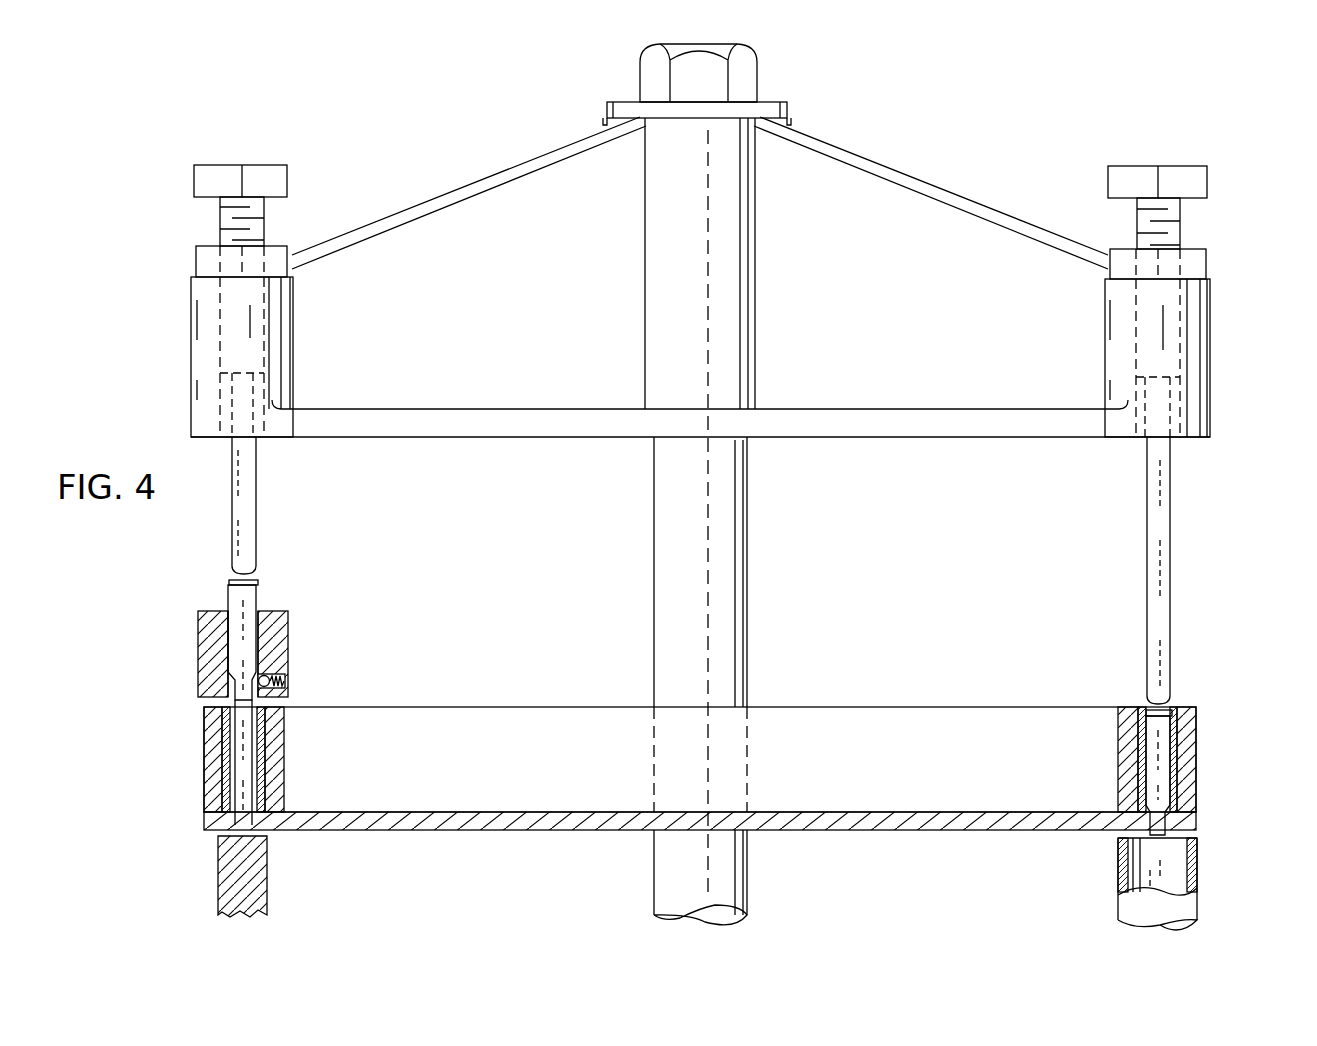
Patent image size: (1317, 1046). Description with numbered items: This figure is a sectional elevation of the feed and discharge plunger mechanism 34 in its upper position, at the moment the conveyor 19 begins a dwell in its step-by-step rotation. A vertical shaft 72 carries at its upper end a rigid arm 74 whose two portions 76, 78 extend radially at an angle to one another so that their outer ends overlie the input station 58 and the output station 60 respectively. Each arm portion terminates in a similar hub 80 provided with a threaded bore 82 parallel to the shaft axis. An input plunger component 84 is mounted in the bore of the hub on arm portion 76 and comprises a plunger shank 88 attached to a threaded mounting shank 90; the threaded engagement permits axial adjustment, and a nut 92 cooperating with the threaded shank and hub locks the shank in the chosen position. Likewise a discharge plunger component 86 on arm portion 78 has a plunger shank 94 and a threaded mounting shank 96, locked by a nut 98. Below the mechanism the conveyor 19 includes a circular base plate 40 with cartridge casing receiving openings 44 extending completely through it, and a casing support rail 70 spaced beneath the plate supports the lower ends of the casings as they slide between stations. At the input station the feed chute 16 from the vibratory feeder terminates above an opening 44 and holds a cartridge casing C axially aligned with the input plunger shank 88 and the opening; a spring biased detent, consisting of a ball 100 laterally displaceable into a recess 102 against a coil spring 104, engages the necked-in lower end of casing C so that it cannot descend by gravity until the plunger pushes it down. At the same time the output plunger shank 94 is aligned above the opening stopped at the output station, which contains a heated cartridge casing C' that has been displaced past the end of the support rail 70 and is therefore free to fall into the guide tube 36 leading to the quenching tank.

The feed and discharge plunger mechanism 34 is at (1271, 222).
The rigid arm 74 is at (966, 181).
The arm portion 76 is at (542, 178).
The arm portion 78 is at (848, 178).
The shaft 72 is at (737, 540).
The hub 80 is at (200, 318).
The threaded bore 82 is at (222, 410).
The input plunger component 84 is at (272, 460).
The discharge plunger component 86 is at (1135, 452).
The plunger shank 88 is at (250, 540).
The plunger shank 94 is at (1160, 544).
The threaded mounting shank 90 is at (256, 216).
The threaded mounting shank 96 is at (1175, 222).
The nut 92 is at (205, 262).
The nut 98 is at (1200, 266).
The input station 58 is at (331, 612).
The output station 60 is at (1105, 635).
The feed chute 16 is at (199, 650).
The ball 100 is at (262, 675).
The coil spring 104 is at (282, 679).
The recess 102 is at (285, 690).
The cartridge casing C is at (218, 693).
The heated cartridge casing C' is at (1193, 772).
The conveyor 19 is at (560, 705).
The cartridge casing receiving opening 44 is at (232, 752).
The base plate 40 is at (535, 828).
The casing support rail 70 is at (262, 880).
The guide tube 36 is at (1120, 878).